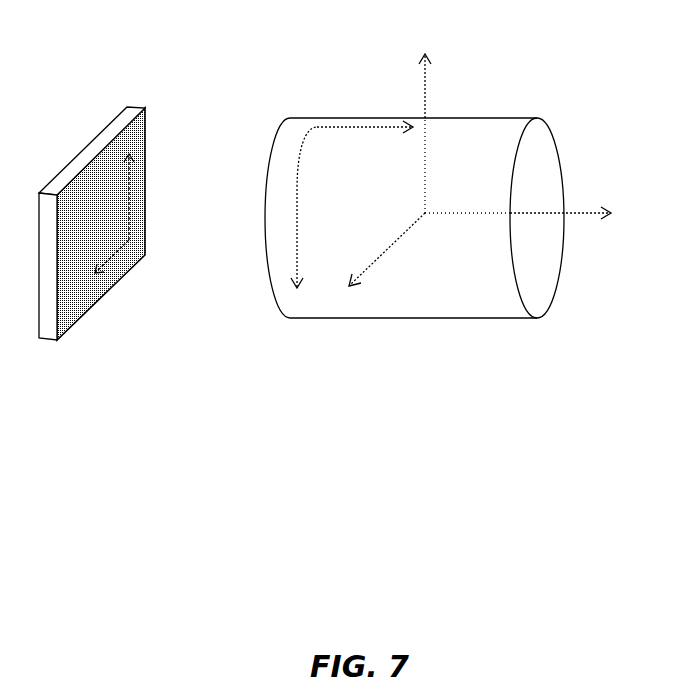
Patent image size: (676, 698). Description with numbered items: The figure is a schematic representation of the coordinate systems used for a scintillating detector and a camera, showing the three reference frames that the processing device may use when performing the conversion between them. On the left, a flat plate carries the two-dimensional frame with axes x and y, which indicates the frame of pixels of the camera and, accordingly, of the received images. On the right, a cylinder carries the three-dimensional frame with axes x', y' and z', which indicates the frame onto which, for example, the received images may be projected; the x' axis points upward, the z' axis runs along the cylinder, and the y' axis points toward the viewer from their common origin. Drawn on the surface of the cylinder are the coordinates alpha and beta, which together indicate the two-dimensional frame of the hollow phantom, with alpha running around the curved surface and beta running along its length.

The camera frame x axis x is at (116, 196).
The camera frame y axis y is at (103, 268).
The three-dimensional frame x' axis x' is at (432, 122).
The three-dimensional frame y' axis y' is at (387, 260).
The three-dimensional frame z' axis z' is at (526, 205).
The hollow phantom frame alpha coordinate alpha is at (307, 207).
The hollow phantom frame beta coordinate beta is at (365, 144).